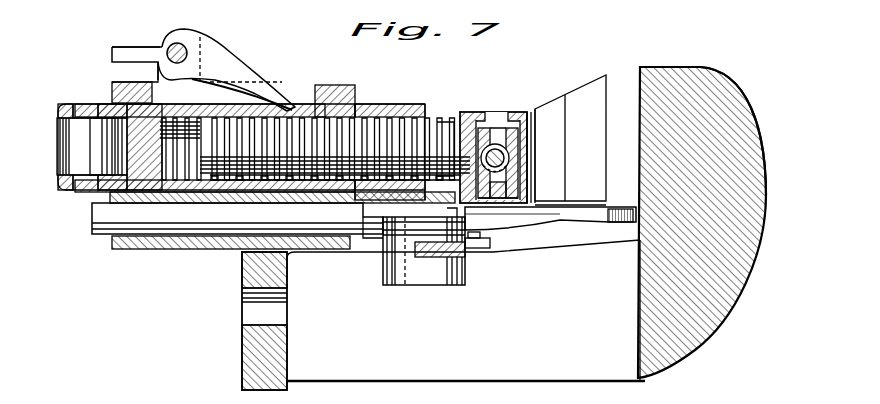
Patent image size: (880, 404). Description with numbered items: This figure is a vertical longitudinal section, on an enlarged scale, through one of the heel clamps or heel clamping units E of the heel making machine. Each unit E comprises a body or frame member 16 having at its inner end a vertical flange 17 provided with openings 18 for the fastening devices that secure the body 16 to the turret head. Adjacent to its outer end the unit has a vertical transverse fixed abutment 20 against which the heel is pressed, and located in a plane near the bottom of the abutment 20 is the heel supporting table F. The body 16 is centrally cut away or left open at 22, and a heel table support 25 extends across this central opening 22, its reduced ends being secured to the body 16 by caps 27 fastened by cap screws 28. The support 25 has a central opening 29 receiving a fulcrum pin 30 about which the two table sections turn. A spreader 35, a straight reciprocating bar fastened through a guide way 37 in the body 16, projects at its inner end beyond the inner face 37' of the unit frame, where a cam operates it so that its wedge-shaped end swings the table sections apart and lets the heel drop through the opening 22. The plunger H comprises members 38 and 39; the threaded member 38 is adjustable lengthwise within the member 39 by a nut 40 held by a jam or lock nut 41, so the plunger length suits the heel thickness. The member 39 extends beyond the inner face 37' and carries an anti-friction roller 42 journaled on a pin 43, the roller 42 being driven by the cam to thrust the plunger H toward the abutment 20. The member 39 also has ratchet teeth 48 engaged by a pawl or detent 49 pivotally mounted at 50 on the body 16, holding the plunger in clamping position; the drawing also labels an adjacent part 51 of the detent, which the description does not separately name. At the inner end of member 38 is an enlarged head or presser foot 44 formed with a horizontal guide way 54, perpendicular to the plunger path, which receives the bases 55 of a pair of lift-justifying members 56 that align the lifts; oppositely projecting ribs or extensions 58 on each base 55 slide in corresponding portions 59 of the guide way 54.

The body or frame member 16 is at (466, 310).
The vertical flange 17 is at (246, 363).
The openings 18 is at (285, 312).
The fixed abutment 20 is at (660, 157).
The central opening 22 is at (463, 290).
The heel table support 25 is at (468, 262).
The caps 27 is at (380, 247).
The cap screws 28 is at (493, 237).
The central opening 29 is at (395, 285).
The fulcrum pin 30 is at (437, 280).
The spreader 35 is at (335, 225).
The guide way 37 is at (282, 237).
The inner face 37' is at (218, 259).
The plunger member 38 is at (389, 127).
The plunger member 39 is at (338, 86).
The nut 40 is at (365, 107).
The jam or lock nut 41 is at (408, 97).
The anti-friction roller 42 is at (62, 160).
The pin 43 is at (82, 104).
The plunger head or presser foot 44 is at (466, 113).
The ratchet teeth 48 is at (296, 103).
The pawl or detent 49 is at (252, 80).
The pivot 50 is at (187, 52).
The handle arm 51 is at (142, 48).
The guide way 54 is at (513, 107).
The bases 55 is at (518, 158).
The lift-justifying members 56 is at (570, 140).
The ribs or extensions 58 is at (482, 107).
The guide way portions 59 is at (533, 108).
The heel clamp or heel clamping unit E is at (718, 320).
The heel supporting table F is at (580, 224).
The plunger H is at (104, 103).